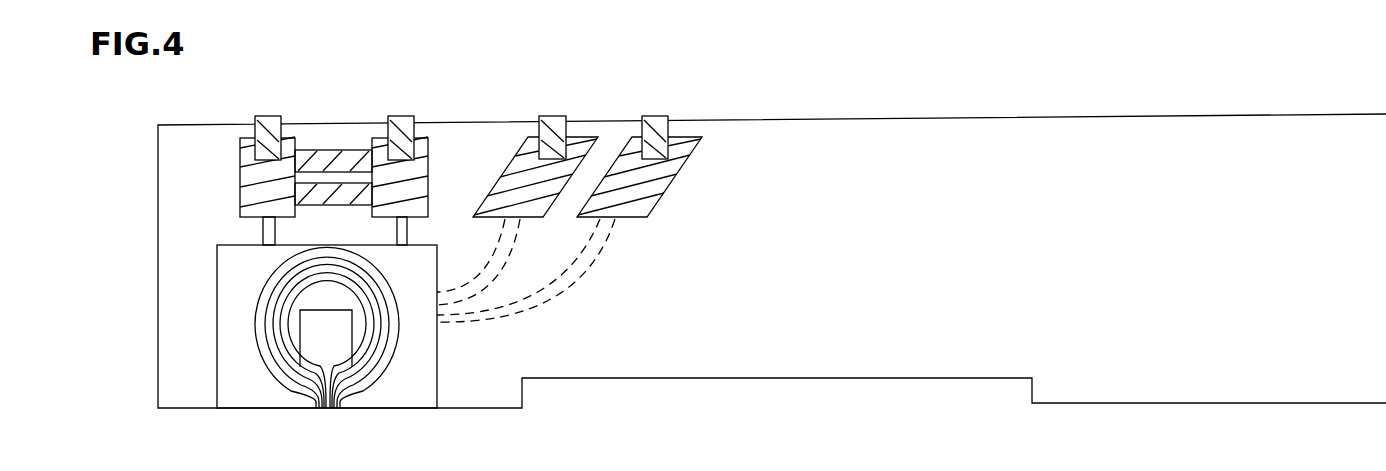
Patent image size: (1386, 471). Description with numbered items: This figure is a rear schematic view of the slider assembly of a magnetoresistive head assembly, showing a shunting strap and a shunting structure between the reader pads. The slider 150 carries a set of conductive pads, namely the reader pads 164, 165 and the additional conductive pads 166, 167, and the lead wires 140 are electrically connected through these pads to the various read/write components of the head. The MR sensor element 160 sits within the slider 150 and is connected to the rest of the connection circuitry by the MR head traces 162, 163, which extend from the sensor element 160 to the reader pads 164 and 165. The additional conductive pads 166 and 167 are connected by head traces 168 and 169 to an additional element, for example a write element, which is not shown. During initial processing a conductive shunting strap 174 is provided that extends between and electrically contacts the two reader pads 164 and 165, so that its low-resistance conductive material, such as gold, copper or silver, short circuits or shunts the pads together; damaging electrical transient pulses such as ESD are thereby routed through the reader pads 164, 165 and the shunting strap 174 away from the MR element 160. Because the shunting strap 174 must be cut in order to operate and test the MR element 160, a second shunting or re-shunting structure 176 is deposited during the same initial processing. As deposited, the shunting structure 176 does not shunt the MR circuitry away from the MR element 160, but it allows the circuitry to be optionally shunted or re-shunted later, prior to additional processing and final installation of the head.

The lead wires 140 is at (267, 116).
The slider 150 is at (882, 345).
The MR sensor element 160 is at (298, 380).
The MR head trace 162 is at (265, 230).
The MR head trace 163 is at (407, 230).
The reader pad 164 is at (250, 157).
The reader pad 165 is at (420, 160).
The conductive pad 166 is at (527, 173).
The conductive pad 167 is at (630, 163).
The head trace 168 is at (505, 250).
The head trace 169 is at (585, 262).
The conductive shunting strap 174 is at (323, 160).
The shunting structure 176 is at (340, 197).